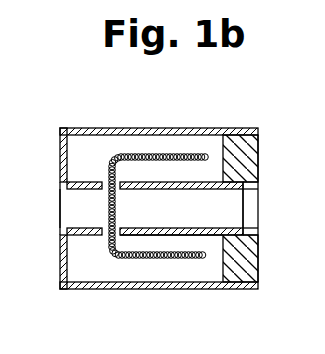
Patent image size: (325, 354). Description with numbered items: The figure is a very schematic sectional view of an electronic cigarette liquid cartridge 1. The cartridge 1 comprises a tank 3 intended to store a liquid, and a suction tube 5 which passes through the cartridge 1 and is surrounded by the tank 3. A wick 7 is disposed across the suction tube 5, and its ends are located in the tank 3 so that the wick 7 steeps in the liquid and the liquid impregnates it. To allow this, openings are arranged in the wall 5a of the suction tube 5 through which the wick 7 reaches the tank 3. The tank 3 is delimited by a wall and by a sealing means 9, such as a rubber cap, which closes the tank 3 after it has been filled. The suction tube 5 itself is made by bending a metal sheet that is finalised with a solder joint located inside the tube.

The cartridge 1 is at (130, 106).
The tank 3 is at (213, 257).
The suction tube 5 is at (36, 193).
The wall of the suction tube 5a is at (201, 189).
The wick 7 is at (86, 207).
The sealing means 9 is at (272, 142).